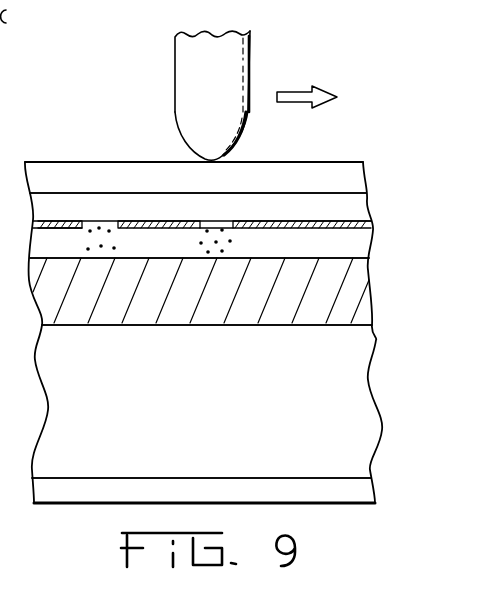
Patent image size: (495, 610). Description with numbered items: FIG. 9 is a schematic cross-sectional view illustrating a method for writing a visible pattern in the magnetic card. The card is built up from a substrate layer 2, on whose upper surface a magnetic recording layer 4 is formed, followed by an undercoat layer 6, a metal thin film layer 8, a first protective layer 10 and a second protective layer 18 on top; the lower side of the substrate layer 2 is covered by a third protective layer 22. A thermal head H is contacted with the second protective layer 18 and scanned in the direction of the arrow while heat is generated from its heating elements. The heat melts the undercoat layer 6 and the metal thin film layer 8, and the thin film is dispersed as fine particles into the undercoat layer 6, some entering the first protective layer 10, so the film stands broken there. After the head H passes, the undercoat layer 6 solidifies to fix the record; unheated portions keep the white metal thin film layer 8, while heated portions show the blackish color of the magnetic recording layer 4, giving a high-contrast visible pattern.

The thermal head H is at (186, 109).
The second protective layer 18 is at (354, 176).
The first protective layer 10 is at (352, 205).
The metal thin film layer 8 is at (356, 222).
The undercoat layer 6 is at (360, 240).
The magnetic recording layer 4 is at (355, 288).
The substrate layer 2 is at (360, 415).
The third protective layer 22 is at (358, 488).